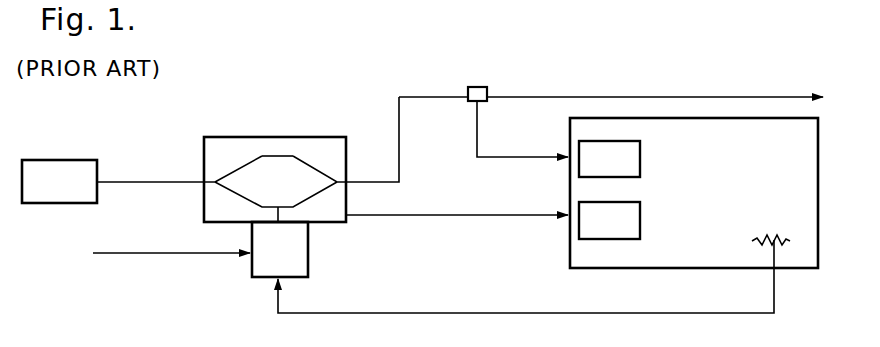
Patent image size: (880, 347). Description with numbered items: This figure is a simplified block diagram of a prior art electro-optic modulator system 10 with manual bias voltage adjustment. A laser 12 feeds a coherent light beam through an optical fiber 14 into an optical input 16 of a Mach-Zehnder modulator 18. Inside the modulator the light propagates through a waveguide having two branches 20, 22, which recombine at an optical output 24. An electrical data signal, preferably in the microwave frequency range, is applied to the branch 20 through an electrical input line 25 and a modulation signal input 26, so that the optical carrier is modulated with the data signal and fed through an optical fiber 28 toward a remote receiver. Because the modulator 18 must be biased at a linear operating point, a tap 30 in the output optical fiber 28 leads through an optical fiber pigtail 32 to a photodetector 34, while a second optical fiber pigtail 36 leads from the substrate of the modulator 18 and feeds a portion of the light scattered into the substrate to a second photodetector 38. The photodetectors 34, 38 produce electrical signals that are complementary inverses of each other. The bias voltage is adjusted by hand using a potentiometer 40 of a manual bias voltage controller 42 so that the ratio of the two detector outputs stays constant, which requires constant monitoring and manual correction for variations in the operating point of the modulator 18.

The electro-optic modulator system 10 is at (152, 112).
The laser 12 is at (53, 160).
The optical fiber 14 is at (135, 182).
The optical input 16 is at (215, 184).
The Mach-Zehnder modulator 18 is at (330, 137).
The waveguide branch 20 is at (313, 200).
The waveguide branch 22 is at (244, 163).
The optical output 24 is at (339, 172).
The electrical input line 25 is at (150, 253).
The modulation signal input 26 is at (308, 254).
The optical fiber 28 is at (553, 97).
The tap 30 is at (478, 87).
The optical fiber pigtail 32 is at (490, 157).
The photodetector 34 is at (640, 152).
The second optical fiber pigtail 36 is at (490, 215).
The second photodetector 38 is at (640, 213).
The potentiometer 40 is at (768, 236).
The manual bias voltage controller 42 is at (800, 268).